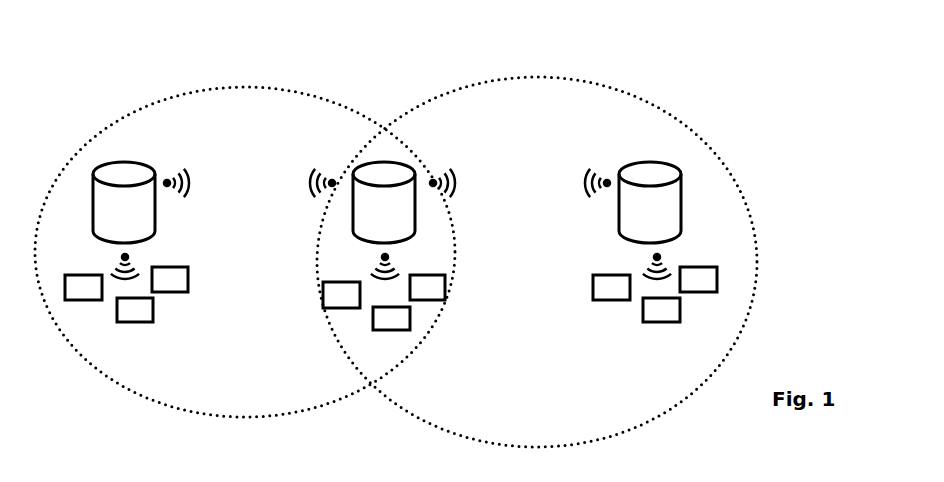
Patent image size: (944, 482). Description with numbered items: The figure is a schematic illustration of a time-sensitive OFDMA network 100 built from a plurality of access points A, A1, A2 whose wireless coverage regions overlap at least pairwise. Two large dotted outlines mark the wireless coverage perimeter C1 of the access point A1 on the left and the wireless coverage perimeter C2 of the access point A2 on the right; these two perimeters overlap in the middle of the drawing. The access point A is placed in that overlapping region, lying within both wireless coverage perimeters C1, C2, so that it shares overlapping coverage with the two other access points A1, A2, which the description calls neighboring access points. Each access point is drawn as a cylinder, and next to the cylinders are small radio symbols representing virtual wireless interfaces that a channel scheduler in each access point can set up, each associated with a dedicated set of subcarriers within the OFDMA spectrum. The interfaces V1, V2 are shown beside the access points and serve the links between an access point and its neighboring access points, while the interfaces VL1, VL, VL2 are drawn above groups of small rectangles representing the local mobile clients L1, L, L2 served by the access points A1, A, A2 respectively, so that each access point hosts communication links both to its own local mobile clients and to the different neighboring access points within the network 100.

The time-sensitive OFDMA network 100 is at (126, 37).
The wireless coverage perimeter C1 is at (98, 137).
The wireless coverage perimeter C2 is at (722, 165).
The access point A1 is at (155, 213).
The access point A is at (353, 212).
The access point A2 is at (618, 212).
The virtual wireless interface V1 is at (173, 163).
The virtual wireless interface V2 is at (444, 164).
The local mobile clients L1 is at (153, 310).
The local mobile clients L is at (410, 315).
The local mobile clients L2 is at (593, 290).
The virtual wireless interface VL1 is at (110, 285).
The virtual wireless interface VL is at (374, 287).
The virtual wireless interface VL2 is at (637, 288).